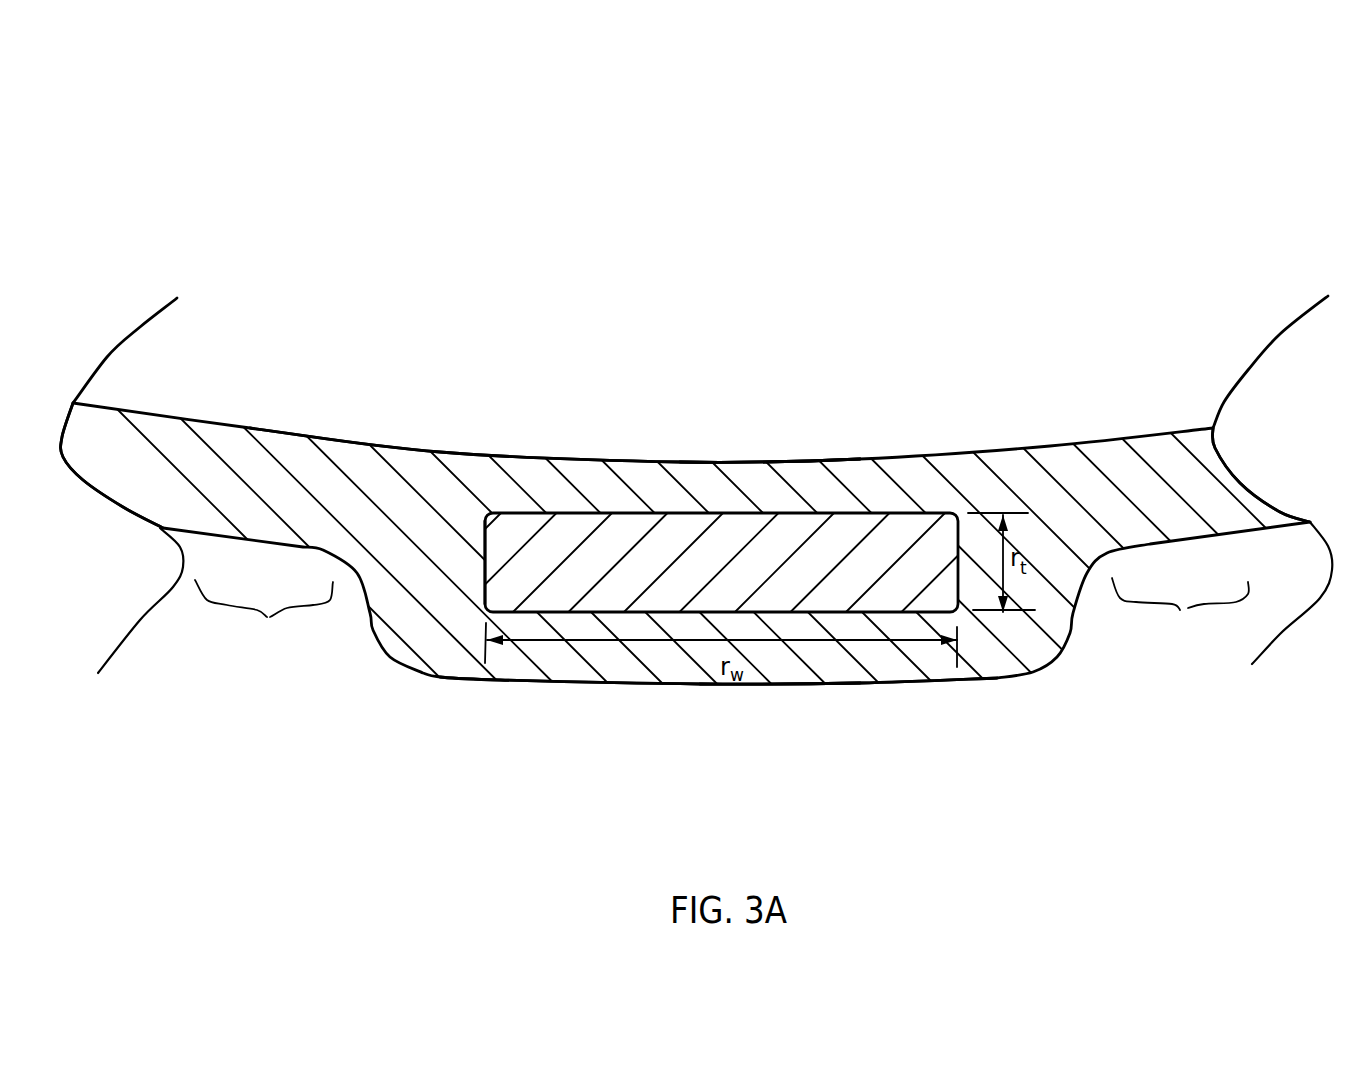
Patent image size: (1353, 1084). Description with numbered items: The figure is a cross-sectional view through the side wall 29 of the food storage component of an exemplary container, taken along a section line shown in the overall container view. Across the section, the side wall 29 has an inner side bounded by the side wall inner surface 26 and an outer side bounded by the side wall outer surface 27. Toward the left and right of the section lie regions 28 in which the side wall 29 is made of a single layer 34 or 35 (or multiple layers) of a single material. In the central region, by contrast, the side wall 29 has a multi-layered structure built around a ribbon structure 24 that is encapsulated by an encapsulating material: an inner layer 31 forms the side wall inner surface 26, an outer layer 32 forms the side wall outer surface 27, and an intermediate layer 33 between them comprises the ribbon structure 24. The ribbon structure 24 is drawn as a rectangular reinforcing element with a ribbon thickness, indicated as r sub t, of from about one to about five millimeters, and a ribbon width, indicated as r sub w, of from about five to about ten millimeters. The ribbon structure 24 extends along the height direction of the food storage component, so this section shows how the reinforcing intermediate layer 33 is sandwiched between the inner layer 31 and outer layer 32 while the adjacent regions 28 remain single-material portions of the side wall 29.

The side wall 29 is at (400, 230).
The ribbon structure 24 is at (875, 553).
The side wall inner surface 26 is at (538, 452).
The side wall outer surface 27 is at (692, 685).
The regions 28 is at (267, 617).
The inner layer 31 is at (812, 480).
The outer layer 32 is at (768, 657).
The intermediate layer 33 is at (492, 557).
The single layer 34 is at (208, 478).
The single layer 35 is at (1127, 470).